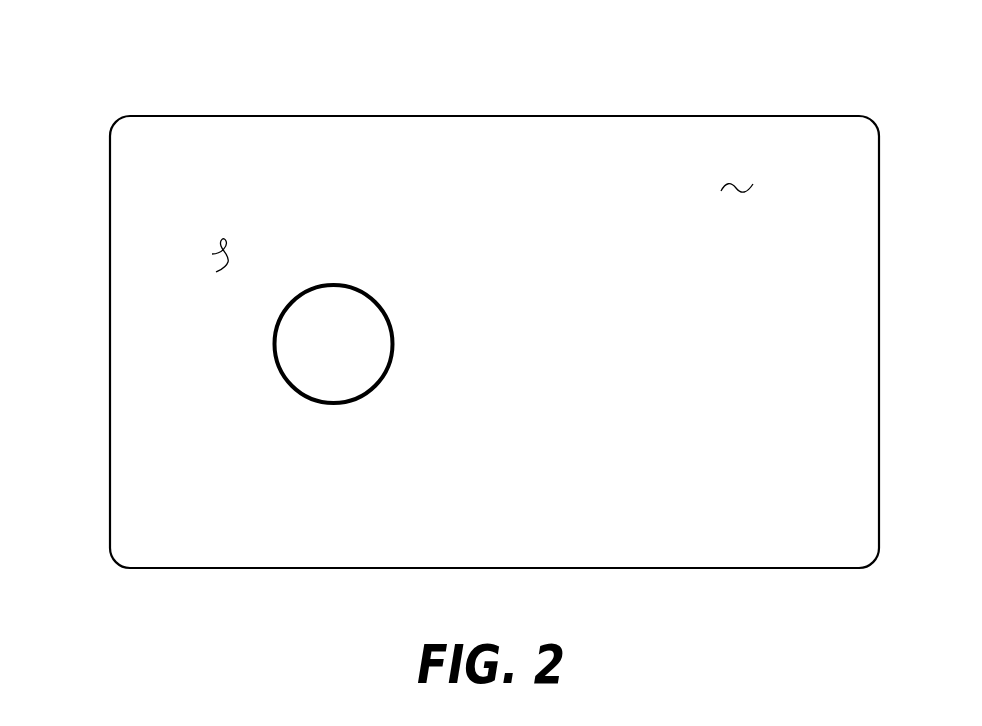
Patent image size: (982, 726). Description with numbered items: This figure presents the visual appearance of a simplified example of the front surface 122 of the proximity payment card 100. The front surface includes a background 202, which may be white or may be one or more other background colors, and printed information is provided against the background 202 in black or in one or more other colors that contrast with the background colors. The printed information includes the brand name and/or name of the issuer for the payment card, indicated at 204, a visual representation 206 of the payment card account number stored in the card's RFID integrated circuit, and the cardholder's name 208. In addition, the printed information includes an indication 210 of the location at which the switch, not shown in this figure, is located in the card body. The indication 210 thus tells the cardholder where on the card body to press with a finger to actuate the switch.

The proximity payment card 100 is at (281, 95).
The front surface 122 is at (738, 182).
The background 202 is at (212, 254).
The brand name and/or name of the issuer 204 is at (510, 195).
The visual representation of the payment card account number 206 is at (230, 456).
The cardholder's name 208 is at (318, 538).
The indication of the location of the switch 210 is at (410, 329).